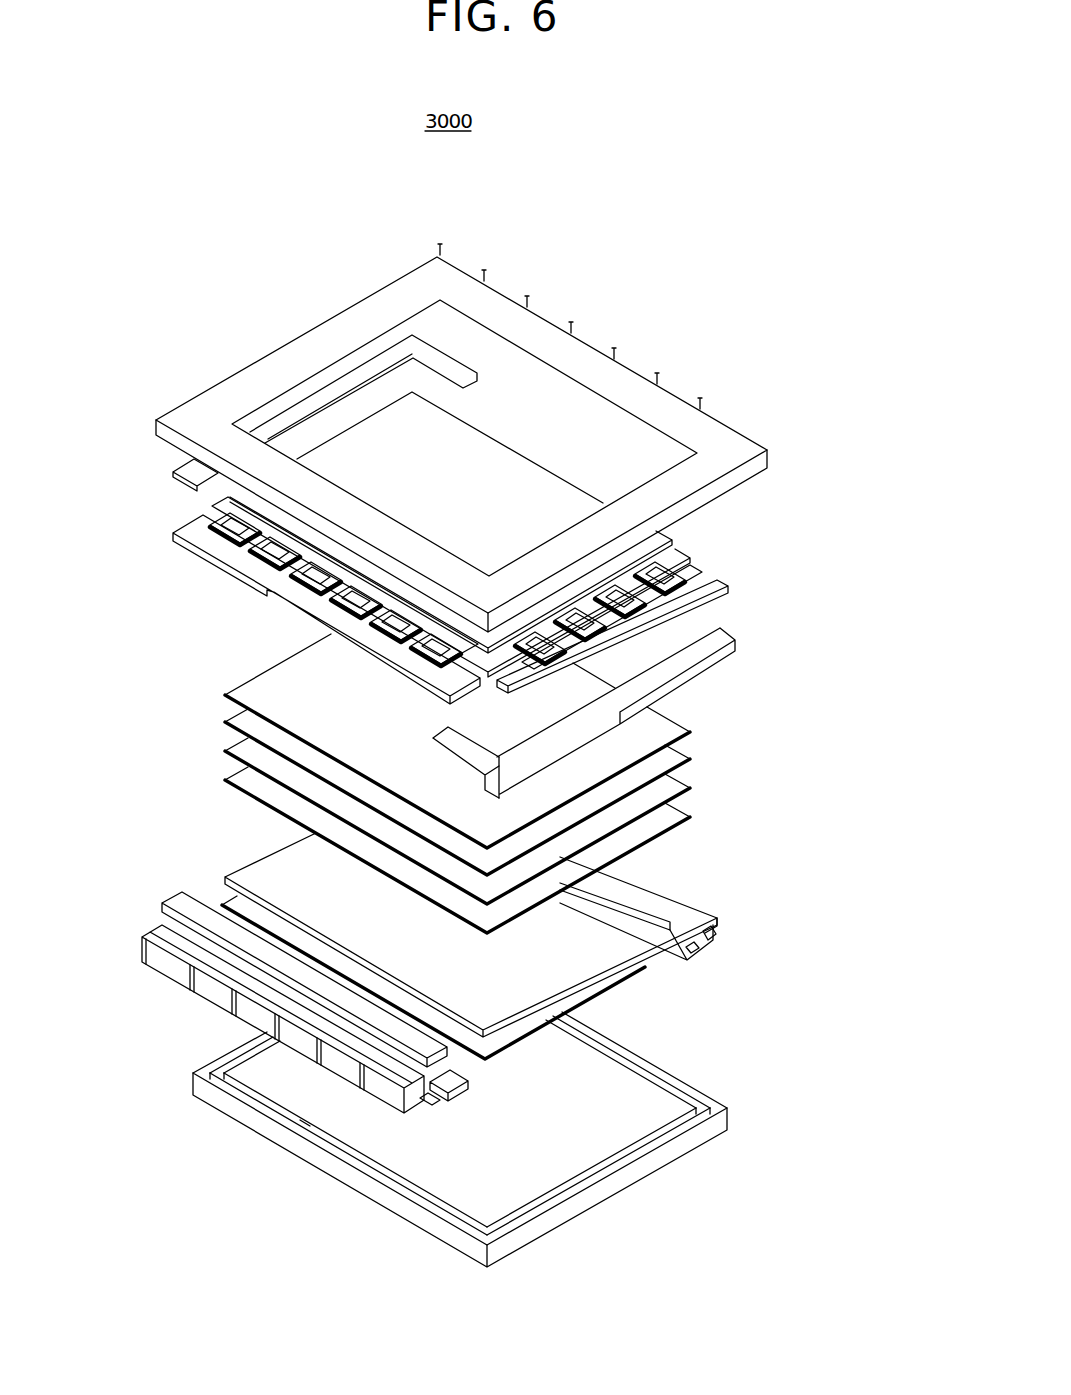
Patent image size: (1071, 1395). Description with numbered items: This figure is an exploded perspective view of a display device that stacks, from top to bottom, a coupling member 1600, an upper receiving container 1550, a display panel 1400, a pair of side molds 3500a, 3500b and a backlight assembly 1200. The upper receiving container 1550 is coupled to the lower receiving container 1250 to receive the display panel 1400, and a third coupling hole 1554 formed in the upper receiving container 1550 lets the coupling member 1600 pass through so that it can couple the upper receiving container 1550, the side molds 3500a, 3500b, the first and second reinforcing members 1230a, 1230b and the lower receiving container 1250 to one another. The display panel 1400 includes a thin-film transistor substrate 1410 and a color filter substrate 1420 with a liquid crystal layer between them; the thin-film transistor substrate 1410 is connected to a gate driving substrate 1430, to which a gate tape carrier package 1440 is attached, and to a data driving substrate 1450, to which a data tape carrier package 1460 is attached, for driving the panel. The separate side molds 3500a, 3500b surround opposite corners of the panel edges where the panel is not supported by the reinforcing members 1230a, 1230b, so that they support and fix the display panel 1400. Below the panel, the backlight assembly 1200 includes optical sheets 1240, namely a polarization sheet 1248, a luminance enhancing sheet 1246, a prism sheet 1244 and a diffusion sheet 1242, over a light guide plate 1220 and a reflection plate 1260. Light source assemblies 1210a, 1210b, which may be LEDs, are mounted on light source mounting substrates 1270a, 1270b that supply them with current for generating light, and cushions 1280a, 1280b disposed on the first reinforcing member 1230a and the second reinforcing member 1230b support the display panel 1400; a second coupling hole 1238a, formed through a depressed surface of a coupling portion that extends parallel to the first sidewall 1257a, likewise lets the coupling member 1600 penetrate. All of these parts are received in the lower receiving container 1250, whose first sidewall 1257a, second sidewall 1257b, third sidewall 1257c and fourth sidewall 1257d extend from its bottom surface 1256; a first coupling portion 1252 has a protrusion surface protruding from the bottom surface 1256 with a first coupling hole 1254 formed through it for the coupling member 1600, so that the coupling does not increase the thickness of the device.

The coupling member 1600 is at (438, 437).
The upper receiving container 1550 is at (247, 383).
The third coupling hole 1554 is at (222, 423).
The side mold 3500a is at (740, 640).
The side mold 3500b is at (173, 466).
The display panel 1400 is at (480, 600).
The color filter substrate 1420 is at (690, 540).
The thin-film transistor substrate 1410 is at (700, 558).
The gate driving substrate 1430 is at (200, 545).
The gate tape carrier package 1440 is at (265, 592).
The data tape carrier package 1460 is at (705, 577).
The data driving substrate 1450 is at (705, 596).
The optical sheets 1240 is at (537, 783).
The polarization sheet 1248 is at (690, 732).
The luminance enhancing sheet 1246 is at (690, 759).
The prism sheet 1244 is at (690, 788).
The diffusion sheet 1242 is at (690, 817).
The LGP 1220 is at (645, 918).
The reflection plate 1260 is at (585, 987).
The backlight assembly 1200 is at (475, 950).
The first reinforcing member 1230a is at (233, 982).
The cushion 1280a is at (205, 915).
The second coupling hole 1238a is at (140, 952).
The light source mounting substrate 1270a is at (457, 1088).
The light source assembly 1210a is at (433, 1102).
The second reinforcing member 1230b is at (705, 927).
The cushion 1280b is at (700, 907).
The light source assembly 1210b is at (712, 942).
The light source mounting substrate 1270b is at (698, 952).
The lower receiving container 1250 is at (449, 1131).
The first coupling portion 1252 is at (195, 1092).
The first coupling hole 1254 is at (292, 1130).
The bottom surface 1256 is at (700, 1112).
The first sidewall 1257a is at (345, 1178).
The second sidewall 1257b is at (657, 1067).
The third sidewall 1257c is at (545, 1222).
The fourth sidewall 1257d is at (235, 1050).